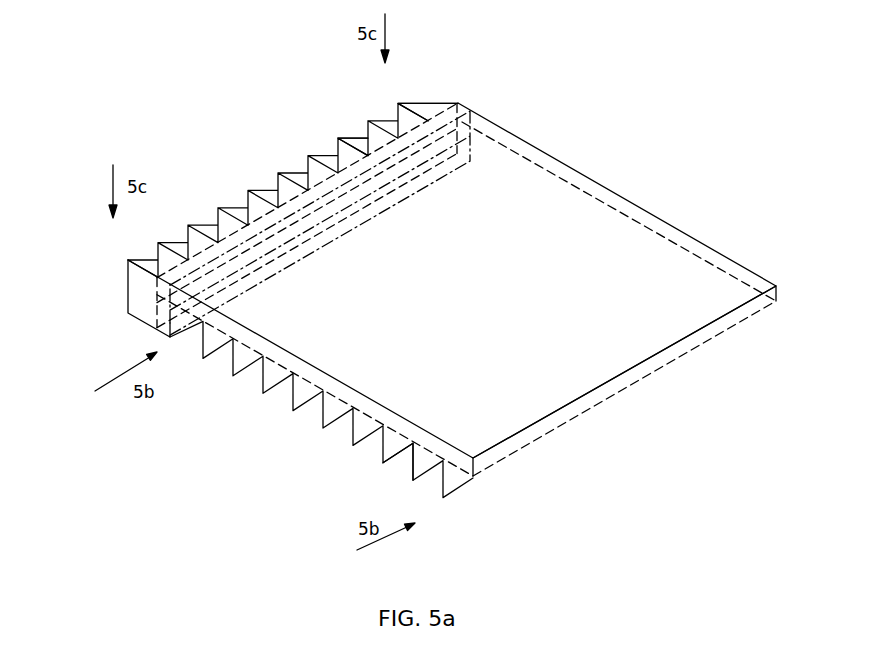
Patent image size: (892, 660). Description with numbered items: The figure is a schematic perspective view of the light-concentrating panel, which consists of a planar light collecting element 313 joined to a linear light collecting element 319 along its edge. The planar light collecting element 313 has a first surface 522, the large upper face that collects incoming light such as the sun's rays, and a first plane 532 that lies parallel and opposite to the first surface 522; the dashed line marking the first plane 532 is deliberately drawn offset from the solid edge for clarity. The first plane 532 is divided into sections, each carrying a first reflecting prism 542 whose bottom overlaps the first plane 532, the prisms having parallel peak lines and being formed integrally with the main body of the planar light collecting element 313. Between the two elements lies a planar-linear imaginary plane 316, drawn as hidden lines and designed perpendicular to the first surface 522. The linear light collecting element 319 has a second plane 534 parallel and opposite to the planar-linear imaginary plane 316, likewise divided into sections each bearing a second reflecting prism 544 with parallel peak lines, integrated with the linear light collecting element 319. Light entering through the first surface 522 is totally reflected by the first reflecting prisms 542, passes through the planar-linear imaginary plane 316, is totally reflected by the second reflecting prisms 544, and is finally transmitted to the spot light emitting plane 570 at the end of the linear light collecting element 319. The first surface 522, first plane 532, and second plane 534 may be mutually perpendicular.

The planar light collecting element 313 is at (606, 173).
The planar-linear imaginary plane 316 is at (437, 132).
The linear light collecting element 319 is at (238, 197).
The first surface 522 is at (553, 313).
The first plane 532 is at (407, 435).
The second plane 534 is at (406, 136).
The first reflecting prism 542 is at (308, 393).
The second reflecting prism 544 is at (351, 157).
The spot light emitting plane 570 is at (142, 290).